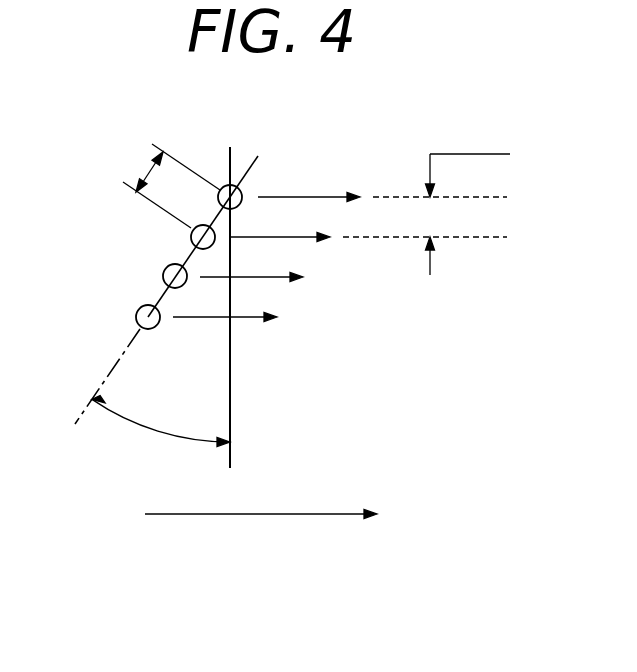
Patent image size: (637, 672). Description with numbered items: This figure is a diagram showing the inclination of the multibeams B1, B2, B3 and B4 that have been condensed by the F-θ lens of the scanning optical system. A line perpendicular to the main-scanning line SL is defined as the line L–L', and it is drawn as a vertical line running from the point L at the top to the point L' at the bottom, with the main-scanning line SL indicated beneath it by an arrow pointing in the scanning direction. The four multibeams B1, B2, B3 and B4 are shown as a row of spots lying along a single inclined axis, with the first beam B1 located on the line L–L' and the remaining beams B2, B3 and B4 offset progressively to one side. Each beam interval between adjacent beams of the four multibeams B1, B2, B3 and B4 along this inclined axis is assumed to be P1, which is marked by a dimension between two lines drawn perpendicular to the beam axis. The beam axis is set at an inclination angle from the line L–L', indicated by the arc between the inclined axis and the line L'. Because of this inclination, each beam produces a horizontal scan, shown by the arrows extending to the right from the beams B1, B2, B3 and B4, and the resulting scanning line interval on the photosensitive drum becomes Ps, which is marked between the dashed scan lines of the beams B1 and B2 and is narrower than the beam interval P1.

The line L–L' L is at (232, 289).
The line L– L' is at (231, 473).
The multibeam B1 is at (243, 186).
The multibeam B2 is at (191, 236).
The multibeam B3 is at (163, 276).
The multibeam B4 is at (136, 316).
The beam interval P1 is at (166, 186).
The scanning line interval Ps is at (468, 200).
The main-scanning line SL is at (261, 533).